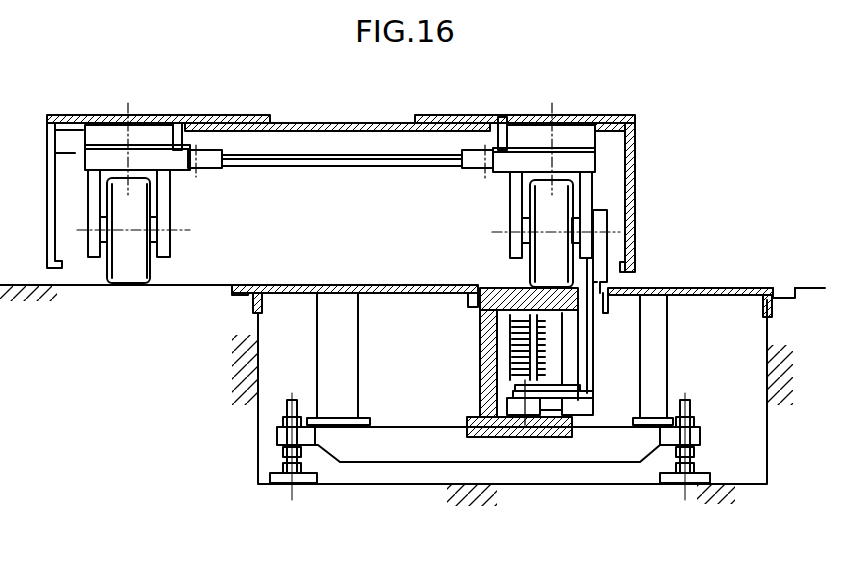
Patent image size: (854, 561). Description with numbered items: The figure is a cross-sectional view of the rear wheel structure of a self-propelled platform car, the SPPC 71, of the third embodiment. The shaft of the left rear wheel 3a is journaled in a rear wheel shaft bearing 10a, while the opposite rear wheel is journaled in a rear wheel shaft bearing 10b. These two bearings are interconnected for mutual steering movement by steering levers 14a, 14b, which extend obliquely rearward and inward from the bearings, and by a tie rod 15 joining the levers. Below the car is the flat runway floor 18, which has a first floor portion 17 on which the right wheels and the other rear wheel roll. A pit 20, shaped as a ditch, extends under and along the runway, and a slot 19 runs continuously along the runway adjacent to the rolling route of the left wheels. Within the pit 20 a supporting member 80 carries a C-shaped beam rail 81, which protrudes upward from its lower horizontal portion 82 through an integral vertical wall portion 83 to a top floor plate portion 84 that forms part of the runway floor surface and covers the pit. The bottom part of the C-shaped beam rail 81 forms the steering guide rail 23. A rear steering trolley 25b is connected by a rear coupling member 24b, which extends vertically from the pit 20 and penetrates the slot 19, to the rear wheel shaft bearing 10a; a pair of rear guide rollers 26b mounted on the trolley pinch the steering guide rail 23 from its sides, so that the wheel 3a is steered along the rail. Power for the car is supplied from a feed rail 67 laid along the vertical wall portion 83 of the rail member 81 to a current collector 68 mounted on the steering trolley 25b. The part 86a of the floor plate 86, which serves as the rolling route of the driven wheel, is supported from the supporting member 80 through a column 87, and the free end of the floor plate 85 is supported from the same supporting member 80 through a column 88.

The self-propelled platform car (SPPC) 71 is at (580, 115).
The steering lever 14b is at (178, 156).
The steering lever 14a is at (500, 157).
The tie rod 15 is at (372, 155).
The rear wheel shaft bearing 10b is at (165, 208).
The rear wheel shaft bearing 10a is at (587, 194).
The rear wheel 3a is at (550, 193).
The floor plate portion 84 is at (543, 290).
The rear coupling member 24b is at (597, 271).
The first floor portion 17 is at (176, 284).
The runway floor 18 is at (293, 284).
The part of floor plate 86a is at (329, 286).
The floor plate 86 is at (284, 293).
The pit 20 is at (398, 315).
The slot 19 is at (664, 289).
The floor plate 85 is at (723, 288).
The column 87 is at (328, 357).
The column 88 is at (658, 382).
The supporting member 80 is at (643, 445).
The C-shaped beam rail 81 is at (478, 333).
The feed rail 67 is at (492, 358).
The vertical wall portion 83 is at (486, 386).
The current collector 68 is at (563, 343).
The rear steering trolley 25b is at (549, 388).
The lower horizontal portion 82 is at (552, 400).
The steering guide rail 23 is at (572, 408).
The rear guide rollers 26b is at (522, 408).